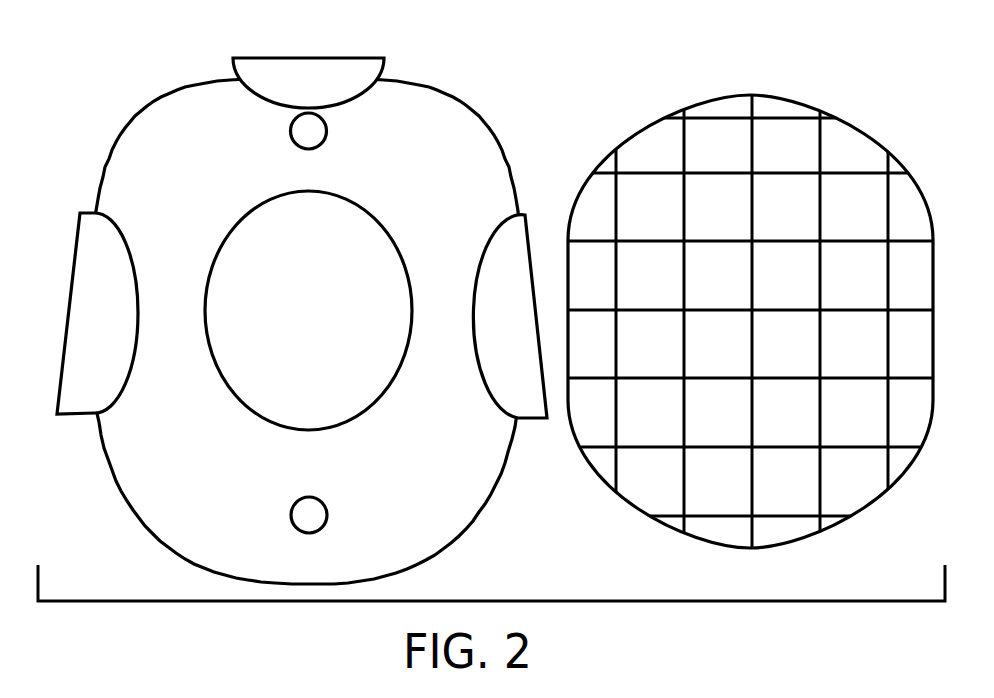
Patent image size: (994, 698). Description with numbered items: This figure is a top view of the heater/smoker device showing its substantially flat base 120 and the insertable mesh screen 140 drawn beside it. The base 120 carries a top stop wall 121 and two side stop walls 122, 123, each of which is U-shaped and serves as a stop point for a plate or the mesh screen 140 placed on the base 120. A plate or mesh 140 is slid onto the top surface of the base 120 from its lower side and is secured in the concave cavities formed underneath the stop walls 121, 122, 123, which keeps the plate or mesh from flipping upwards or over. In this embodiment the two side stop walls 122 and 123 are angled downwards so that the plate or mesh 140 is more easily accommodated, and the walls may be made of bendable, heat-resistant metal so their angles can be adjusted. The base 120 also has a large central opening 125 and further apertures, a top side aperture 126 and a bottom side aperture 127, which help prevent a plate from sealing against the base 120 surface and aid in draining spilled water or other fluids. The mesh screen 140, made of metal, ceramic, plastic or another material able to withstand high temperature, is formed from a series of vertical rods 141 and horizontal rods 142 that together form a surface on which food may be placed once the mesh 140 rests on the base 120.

The base 120 is at (151, 108).
The top stop wall 121 is at (300, 57).
The side stop wall 122 is at (82, 247).
The side stop wall 123 is at (485, 250).
The central opening 125 is at (223, 243).
The top side aperture 126 is at (298, 127).
The bottom side aperture 127 is at (296, 514).
The mesh screen 140 is at (750, 321).
The vertical rods 141 is at (752, 166).
The horizontal grid bars 142 is at (760, 236).